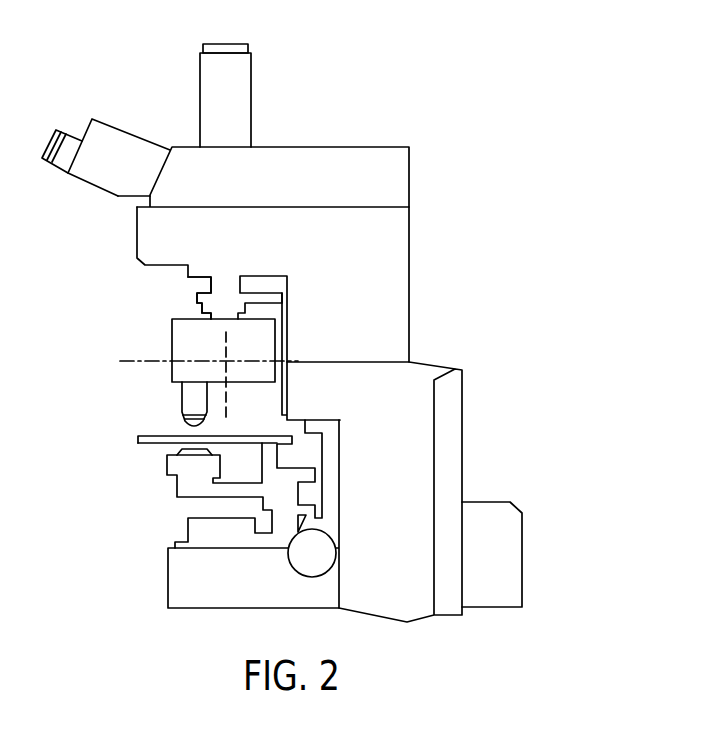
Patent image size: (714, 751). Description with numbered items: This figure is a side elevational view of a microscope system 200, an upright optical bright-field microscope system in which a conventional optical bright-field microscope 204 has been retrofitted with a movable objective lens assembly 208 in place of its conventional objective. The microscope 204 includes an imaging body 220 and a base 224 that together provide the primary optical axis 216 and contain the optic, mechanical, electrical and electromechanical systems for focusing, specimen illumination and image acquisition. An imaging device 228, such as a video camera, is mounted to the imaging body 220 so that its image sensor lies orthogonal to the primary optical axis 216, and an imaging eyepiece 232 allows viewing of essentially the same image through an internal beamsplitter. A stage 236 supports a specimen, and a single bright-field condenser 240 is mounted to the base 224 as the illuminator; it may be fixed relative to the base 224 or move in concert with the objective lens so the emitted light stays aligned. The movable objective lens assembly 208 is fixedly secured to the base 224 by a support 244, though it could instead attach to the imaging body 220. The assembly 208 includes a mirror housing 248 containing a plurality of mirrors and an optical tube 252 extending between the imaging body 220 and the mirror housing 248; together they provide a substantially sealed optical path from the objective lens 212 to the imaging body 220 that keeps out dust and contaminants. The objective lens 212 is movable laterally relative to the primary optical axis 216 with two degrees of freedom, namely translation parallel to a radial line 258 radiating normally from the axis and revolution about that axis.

The microscope system 200 is at (510, 186).
The optical bright-field microscope 204 is at (411, 178).
The movable objective lens assembly 208 is at (170, 349).
The objective lens 212 is at (182, 403).
The primary optical axis 216 is at (233, 397).
The imaging body 220 is at (137, 227).
The base 224 is at (432, 616).
The imaging device 228 is at (250, 72).
The imaging eyepiece 232 is at (82, 141).
The stage 236 is at (138, 440).
The bright-field condenser 240 is at (167, 467).
The support 244 is at (287, 343).
The mirror housing 248 is at (185, 323).
The optical tube 252 is at (210, 282).
The radial line 258 is at (120, 363).